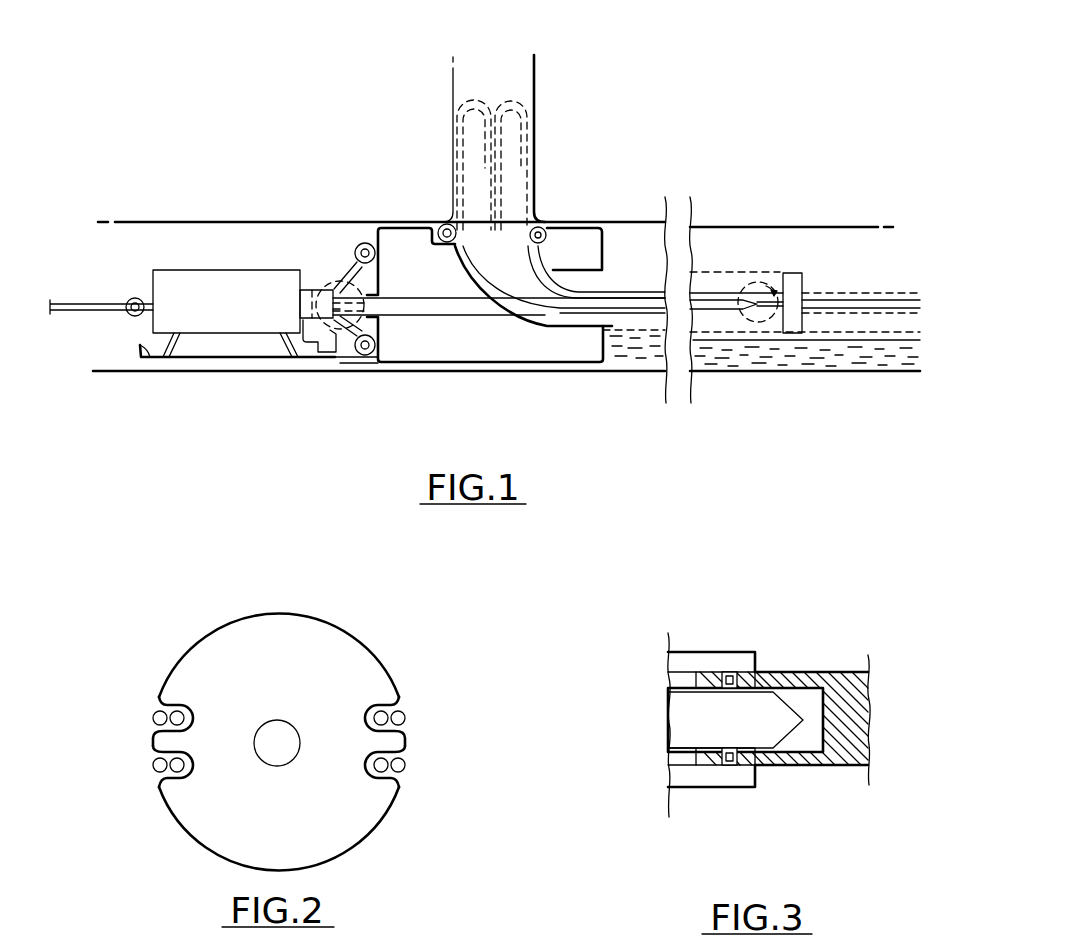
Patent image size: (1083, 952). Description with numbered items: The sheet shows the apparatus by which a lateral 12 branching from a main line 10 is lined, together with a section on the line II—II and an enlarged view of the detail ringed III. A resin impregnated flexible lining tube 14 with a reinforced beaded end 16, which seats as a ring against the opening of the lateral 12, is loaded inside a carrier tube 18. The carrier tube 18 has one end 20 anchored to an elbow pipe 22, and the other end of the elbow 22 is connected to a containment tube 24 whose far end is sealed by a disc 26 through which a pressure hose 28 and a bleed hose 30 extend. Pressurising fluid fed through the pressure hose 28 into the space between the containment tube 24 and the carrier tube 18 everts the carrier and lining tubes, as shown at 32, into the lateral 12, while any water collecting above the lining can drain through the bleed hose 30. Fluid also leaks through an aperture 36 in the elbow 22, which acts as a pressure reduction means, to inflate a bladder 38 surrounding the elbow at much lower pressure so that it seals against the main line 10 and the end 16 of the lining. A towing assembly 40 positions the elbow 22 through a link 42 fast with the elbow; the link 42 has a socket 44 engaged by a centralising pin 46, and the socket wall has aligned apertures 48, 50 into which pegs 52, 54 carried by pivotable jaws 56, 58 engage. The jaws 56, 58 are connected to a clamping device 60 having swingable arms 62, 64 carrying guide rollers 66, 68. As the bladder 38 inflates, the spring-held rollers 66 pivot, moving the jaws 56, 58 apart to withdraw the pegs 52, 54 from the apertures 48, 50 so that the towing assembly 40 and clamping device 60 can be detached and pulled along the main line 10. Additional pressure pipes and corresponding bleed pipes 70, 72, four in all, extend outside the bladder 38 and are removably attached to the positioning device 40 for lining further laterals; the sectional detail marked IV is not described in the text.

In FIG. 1, the main line 10 is at (150, 218).
In FIG. 1, the lateral 12 is at (453, 82).
In FIG. 1, the lining tube 14 is at (567, 267).
In FIG. 1, the beaded end 16 is at (542, 227).
In FIG. 1, the carrier tube 18 is at (625, 293).
In FIG. 1, the end of carrier tube 20 is at (445, 223).
In FIG. 1, the elbow pipe 22 is at (547, 328).
In FIG. 1, the containment tube 24 is at (716, 334).
In FIG. 1, the disc 26 is at (795, 272).
In FIG. 1, the pressure hose 28 is at (848, 310).
In FIG. 1, the bleed hose 30 is at (887, 312).
In FIG. 1, the everted portion 32 is at (497, 105).
In FIG. 1, the aperture 36 is at (487, 312).
In FIG. 1, the bladder 38 is at (585, 363).
In FIG. 1, the towing assembly 40 is at (210, 295).
In FIG. 1, the link 42 is at (453, 318).
In FIG. 3, the link 42 is at (845, 695).
In FIG. 3, the socket 44 is at (797, 700).
In FIG. 3, the centralising pin 46 is at (765, 730).
In FIG. 3, the aperture 48 is at (745, 680).
In FIG. 3, the aperture 50 is at (748, 762).
In FIG. 3, the peg 52 is at (725, 671).
In FIG. 3, the peg 54 is at (727, 766).
In FIG. 3, the jaw 56 is at (688, 660).
In FIG. 3, the jaw 58 is at (697, 776).
In FIG. 1, the clamping device 60 is at (317, 354).
In FIG. 1, the swingable arm 62 is at (322, 288).
In FIG. 1, the swingable arm 64 is at (350, 368).
In FIG. 1, the guide roller 66 is at (357, 243).
In FIG. 1, the guide roller 68 is at (360, 356).
In FIG. 1, the additional pressure pipe 70 is at (765, 373).
In FIG. 2, the additional pressure pipe 70 is at (167, 700).
In FIG. 1, the bleed pipe 72 is at (805, 352).
In FIG. 2, the bleed pipe 72 is at (169, 779).
In FIG. 1, the section line II— II is at (417, 397).
In FIG. 1, the ringed detail III is at (338, 290).
In FIG. 1, the section line IV is at (752, 284).